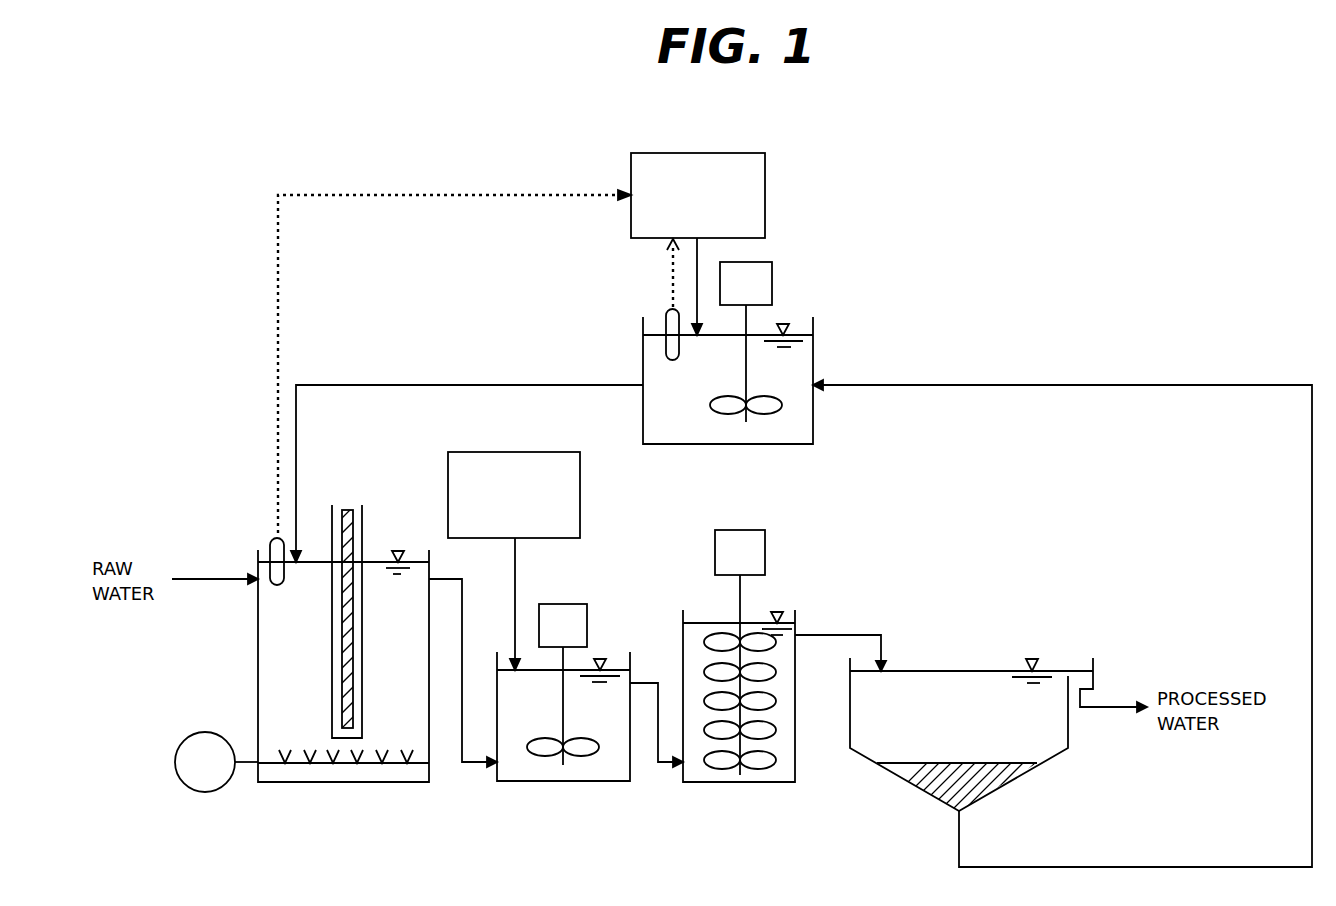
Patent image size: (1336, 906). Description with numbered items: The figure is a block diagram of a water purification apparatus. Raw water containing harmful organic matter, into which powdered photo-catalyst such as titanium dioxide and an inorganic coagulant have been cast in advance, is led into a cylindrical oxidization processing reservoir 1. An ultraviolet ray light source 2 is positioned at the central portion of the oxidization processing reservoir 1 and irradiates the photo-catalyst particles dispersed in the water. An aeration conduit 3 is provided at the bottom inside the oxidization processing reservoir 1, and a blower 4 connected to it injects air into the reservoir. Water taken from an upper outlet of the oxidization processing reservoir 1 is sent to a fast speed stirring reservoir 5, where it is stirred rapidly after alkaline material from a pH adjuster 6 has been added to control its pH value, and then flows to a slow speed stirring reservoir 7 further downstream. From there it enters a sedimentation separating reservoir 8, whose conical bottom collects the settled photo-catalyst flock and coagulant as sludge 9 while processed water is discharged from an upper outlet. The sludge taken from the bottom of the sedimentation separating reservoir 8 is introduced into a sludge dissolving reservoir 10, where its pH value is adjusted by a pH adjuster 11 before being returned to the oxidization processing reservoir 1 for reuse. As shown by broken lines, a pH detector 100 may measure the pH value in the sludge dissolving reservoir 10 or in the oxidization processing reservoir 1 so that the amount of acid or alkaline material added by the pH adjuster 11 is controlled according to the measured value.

The oxidization processing reservoir 1 is at (392, 782).
The ultraviolet ray light source 2 is at (367, 526).
The aeration conduit 3 is at (322, 763).
The blower 4 is at (205, 793).
The fast speed stirring reservoir 5 is at (566, 781).
The pH adjuster 6 is at (580, 500).
The slow speed stirring reservoir 7 is at (742, 782).
The sedimentation separating reservoir 8 is at (1060, 755).
The settled sludge 9 is at (915, 783).
The sludge dissolving reservoir 10 is at (813, 355).
The pH adjuster 11 is at (765, 195).
The pH detector 100 is at (268, 544).